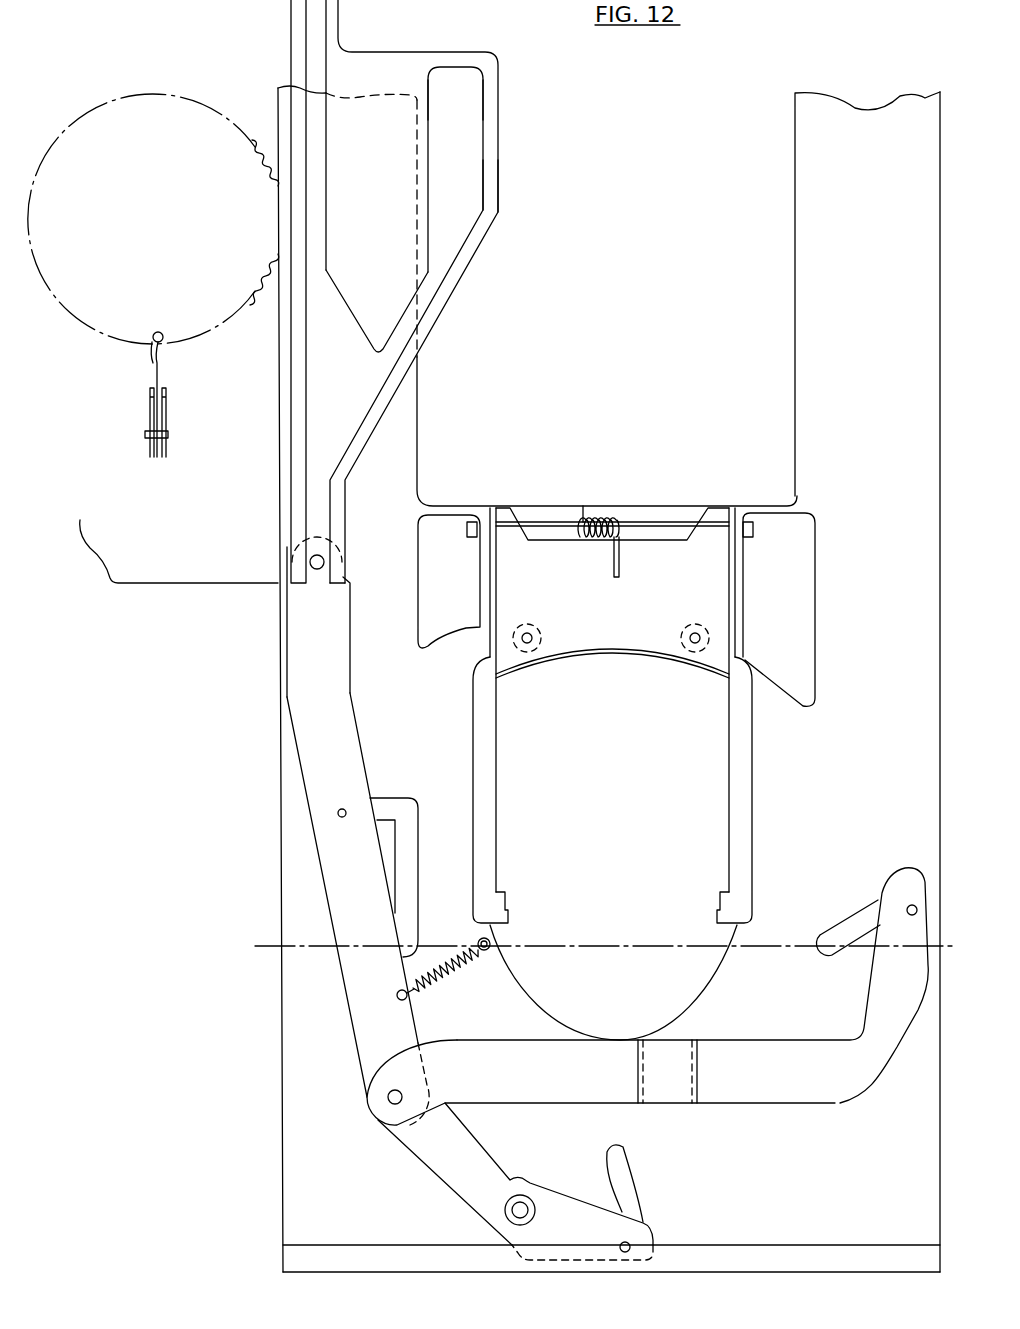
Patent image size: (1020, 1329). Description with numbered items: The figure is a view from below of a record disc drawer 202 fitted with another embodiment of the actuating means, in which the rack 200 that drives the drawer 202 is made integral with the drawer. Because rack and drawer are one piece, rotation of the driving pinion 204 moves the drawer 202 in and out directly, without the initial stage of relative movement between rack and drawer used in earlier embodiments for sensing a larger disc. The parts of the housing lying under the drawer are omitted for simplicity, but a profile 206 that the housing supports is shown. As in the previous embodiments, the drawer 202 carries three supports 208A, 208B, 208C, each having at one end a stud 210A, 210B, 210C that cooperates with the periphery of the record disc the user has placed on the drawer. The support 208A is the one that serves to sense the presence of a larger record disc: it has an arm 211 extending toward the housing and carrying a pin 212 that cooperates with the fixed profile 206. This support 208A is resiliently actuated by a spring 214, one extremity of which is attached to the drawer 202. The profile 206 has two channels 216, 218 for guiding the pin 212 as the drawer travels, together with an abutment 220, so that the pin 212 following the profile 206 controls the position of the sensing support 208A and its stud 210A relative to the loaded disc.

The rack 200 is at (279, 390).
The drawer 202 is at (300, 1145).
The driving pinion 204 is at (116, 325).
The profile 206 is at (360, 390).
The support 208A is at (377, 1023).
The support 208B is at (860, 1030).
The support 208C is at (578, 1230).
The stud 210A is at (342, 809).
The stud 210B is at (910, 905).
The stud 210C is at (628, 1243).
The arm 211 is at (340, 708).
The pin 212 is at (322, 570).
The spring 214 is at (447, 981).
The channel 216 is at (327, 310).
The channel 218 is at (480, 183).
The abutment 220 is at (462, 68).